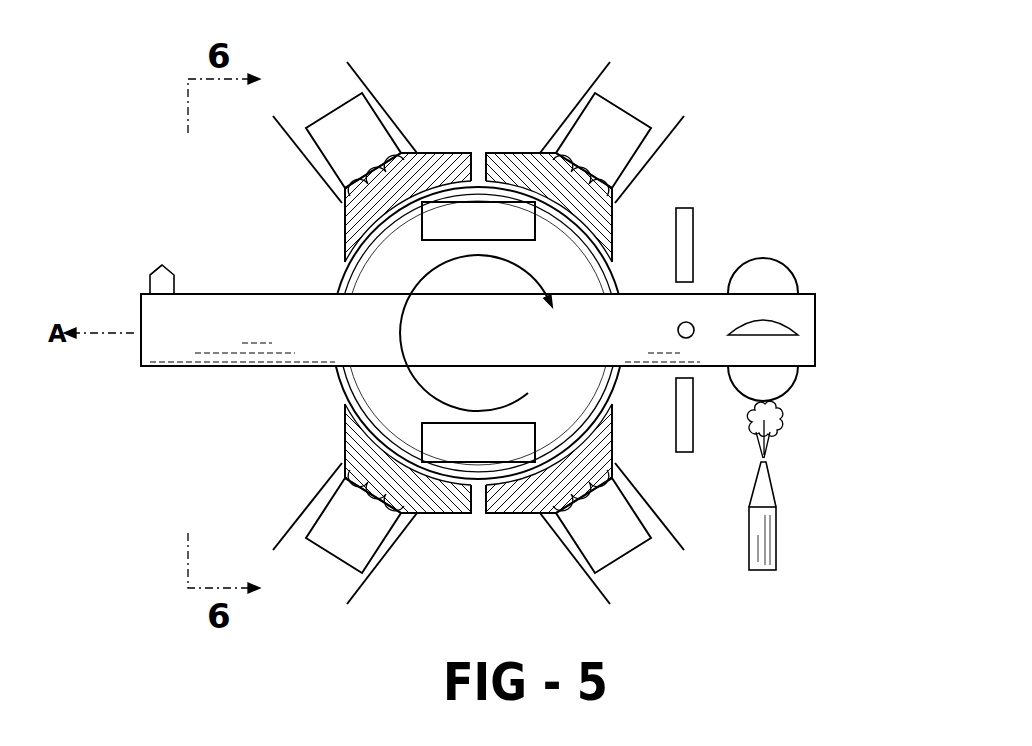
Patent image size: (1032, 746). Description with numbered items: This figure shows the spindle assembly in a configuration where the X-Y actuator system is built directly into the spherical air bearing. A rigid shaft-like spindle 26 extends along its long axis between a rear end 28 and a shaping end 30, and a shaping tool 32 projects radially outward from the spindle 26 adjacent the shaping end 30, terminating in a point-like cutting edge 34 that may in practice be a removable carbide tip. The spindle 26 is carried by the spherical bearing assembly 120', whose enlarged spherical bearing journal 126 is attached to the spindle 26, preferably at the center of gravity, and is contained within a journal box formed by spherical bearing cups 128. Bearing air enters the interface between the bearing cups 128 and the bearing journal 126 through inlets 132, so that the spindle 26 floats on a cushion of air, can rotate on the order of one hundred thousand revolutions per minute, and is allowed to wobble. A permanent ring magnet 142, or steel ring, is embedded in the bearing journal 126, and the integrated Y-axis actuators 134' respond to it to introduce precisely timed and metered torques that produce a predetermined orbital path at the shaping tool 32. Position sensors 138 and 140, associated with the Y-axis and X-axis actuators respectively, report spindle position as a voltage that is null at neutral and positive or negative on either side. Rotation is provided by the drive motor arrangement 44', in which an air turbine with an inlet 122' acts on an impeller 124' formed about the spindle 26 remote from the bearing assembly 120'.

The spindle 26 is at (214, 376).
The rear end 28 is at (816, 345).
The shaping end 30 is at (141, 346).
The shaping tool 32 is at (175, 287).
The cutting edge 34 is at (162, 266).
The drive motor arrangement 44' is at (805, 297).
The spherical bearing assembly 120' is at (478, 307).
The inlet 122' is at (811, 485).
The impeller 124' is at (816, 286).
The bearing journal 126 is at (347, 381).
The bearing cups 128 is at (395, 219).
The inlets 132 is at (478, 152).
The Y-axis actuators 134' is at (494, 327).
The position sensor 138 is at (694, 230).
The position sensor 140 is at (678, 331).
The permanent ring magnet 142 is at (483, 241).